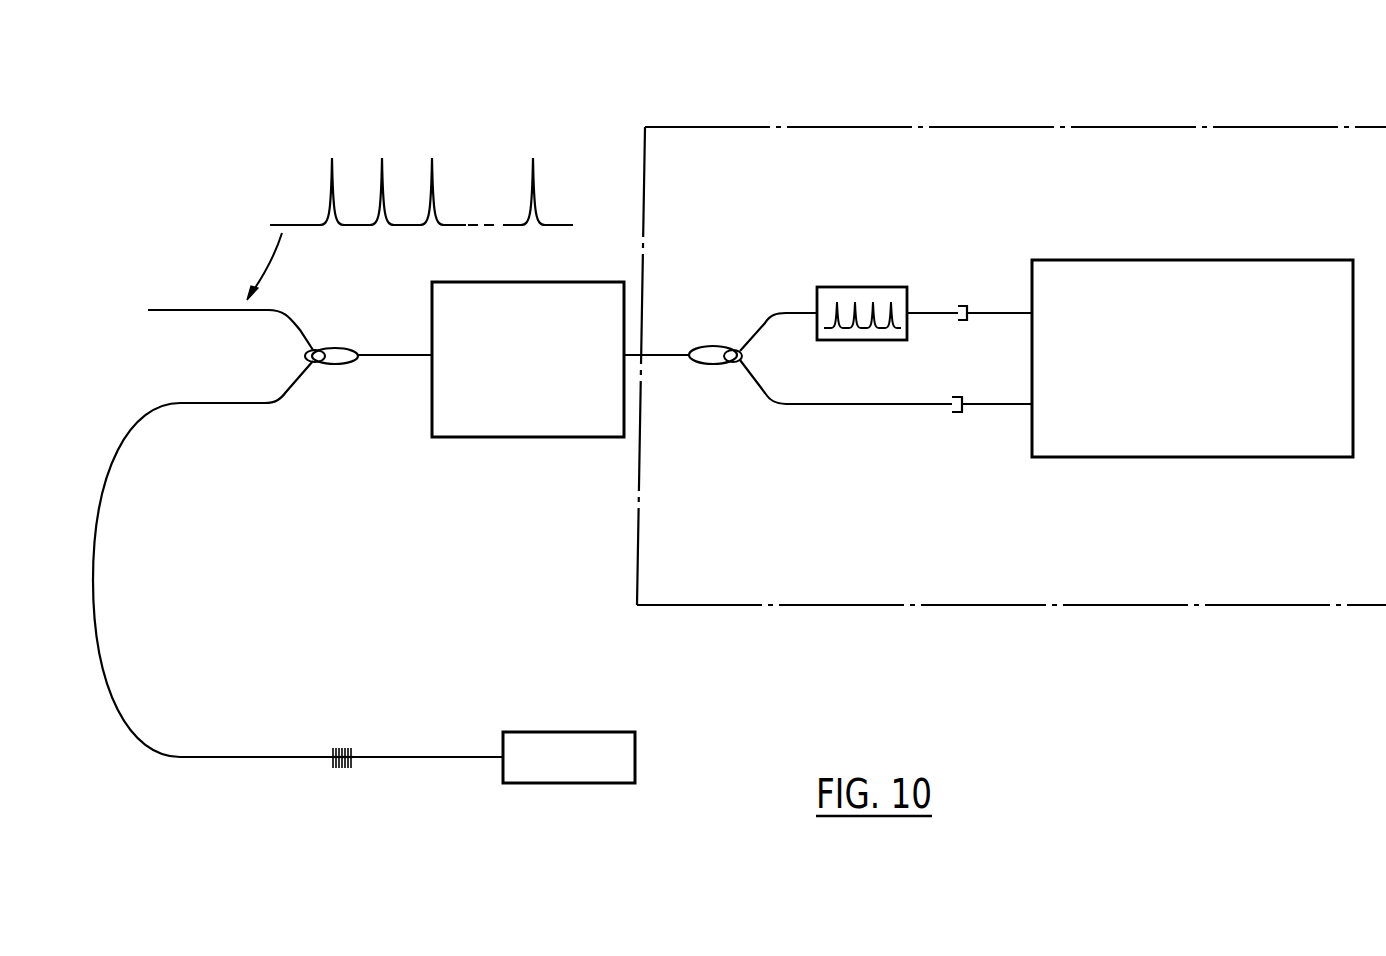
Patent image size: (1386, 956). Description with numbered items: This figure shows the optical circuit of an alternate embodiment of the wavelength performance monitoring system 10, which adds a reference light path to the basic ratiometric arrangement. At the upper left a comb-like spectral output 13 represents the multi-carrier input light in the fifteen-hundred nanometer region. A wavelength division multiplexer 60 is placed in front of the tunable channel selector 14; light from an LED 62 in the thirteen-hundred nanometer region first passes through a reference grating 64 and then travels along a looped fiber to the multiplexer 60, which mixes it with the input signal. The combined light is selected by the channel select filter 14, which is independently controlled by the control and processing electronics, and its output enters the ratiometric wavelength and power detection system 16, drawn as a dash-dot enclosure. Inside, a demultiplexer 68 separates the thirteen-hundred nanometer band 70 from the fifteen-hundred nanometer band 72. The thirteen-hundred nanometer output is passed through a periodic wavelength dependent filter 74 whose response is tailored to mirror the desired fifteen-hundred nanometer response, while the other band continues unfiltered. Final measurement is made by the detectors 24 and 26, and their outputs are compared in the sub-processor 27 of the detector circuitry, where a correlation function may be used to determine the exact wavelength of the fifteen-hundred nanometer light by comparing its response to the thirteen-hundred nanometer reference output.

The optical performance monitoring system 10 is at (797, 80).
The spectral output 13 is at (537, 184).
The tunable channel selector 14 is at (562, 437).
The ratiometric wavelength and power detection system 16 is at (1188, 128).
The optical electrical detector 24 is at (978, 280).
The optical electrical detector 26 is at (957, 418).
The sub-processor 27 is at (1180, 260).
The wavelength division multiplexer 60 is at (340, 347).
The LED 62 is at (612, 732).
The reference grating 64 is at (350, 748).
The demultiplexer 68 is at (717, 345).
The 1300 nm band 70 is at (758, 328).
The 1550 nm band 72 is at (845, 404).
The periodic wavelength dependent filter 74 is at (870, 287).